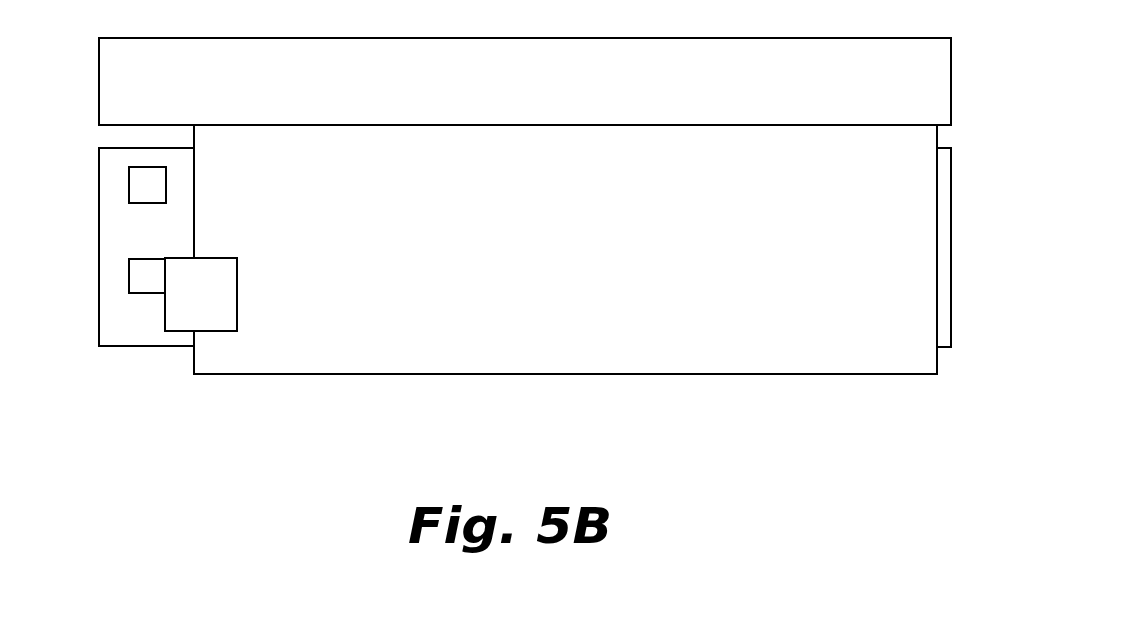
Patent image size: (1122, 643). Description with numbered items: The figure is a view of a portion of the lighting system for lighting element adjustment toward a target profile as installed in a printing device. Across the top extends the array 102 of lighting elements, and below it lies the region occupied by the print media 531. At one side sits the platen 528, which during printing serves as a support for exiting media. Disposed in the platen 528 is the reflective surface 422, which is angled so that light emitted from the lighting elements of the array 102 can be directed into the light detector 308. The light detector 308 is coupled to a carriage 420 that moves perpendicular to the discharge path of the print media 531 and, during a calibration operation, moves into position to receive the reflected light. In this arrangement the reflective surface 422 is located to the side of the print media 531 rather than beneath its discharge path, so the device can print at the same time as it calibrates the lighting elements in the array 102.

The array 102 is at (543, 106).
The light detector 308 is at (148, 276).
The carriage 420 is at (180, 315).
The reflective surface 422 is at (138, 190).
The platen 528 is at (138, 239).
The print media 531 is at (803, 319).